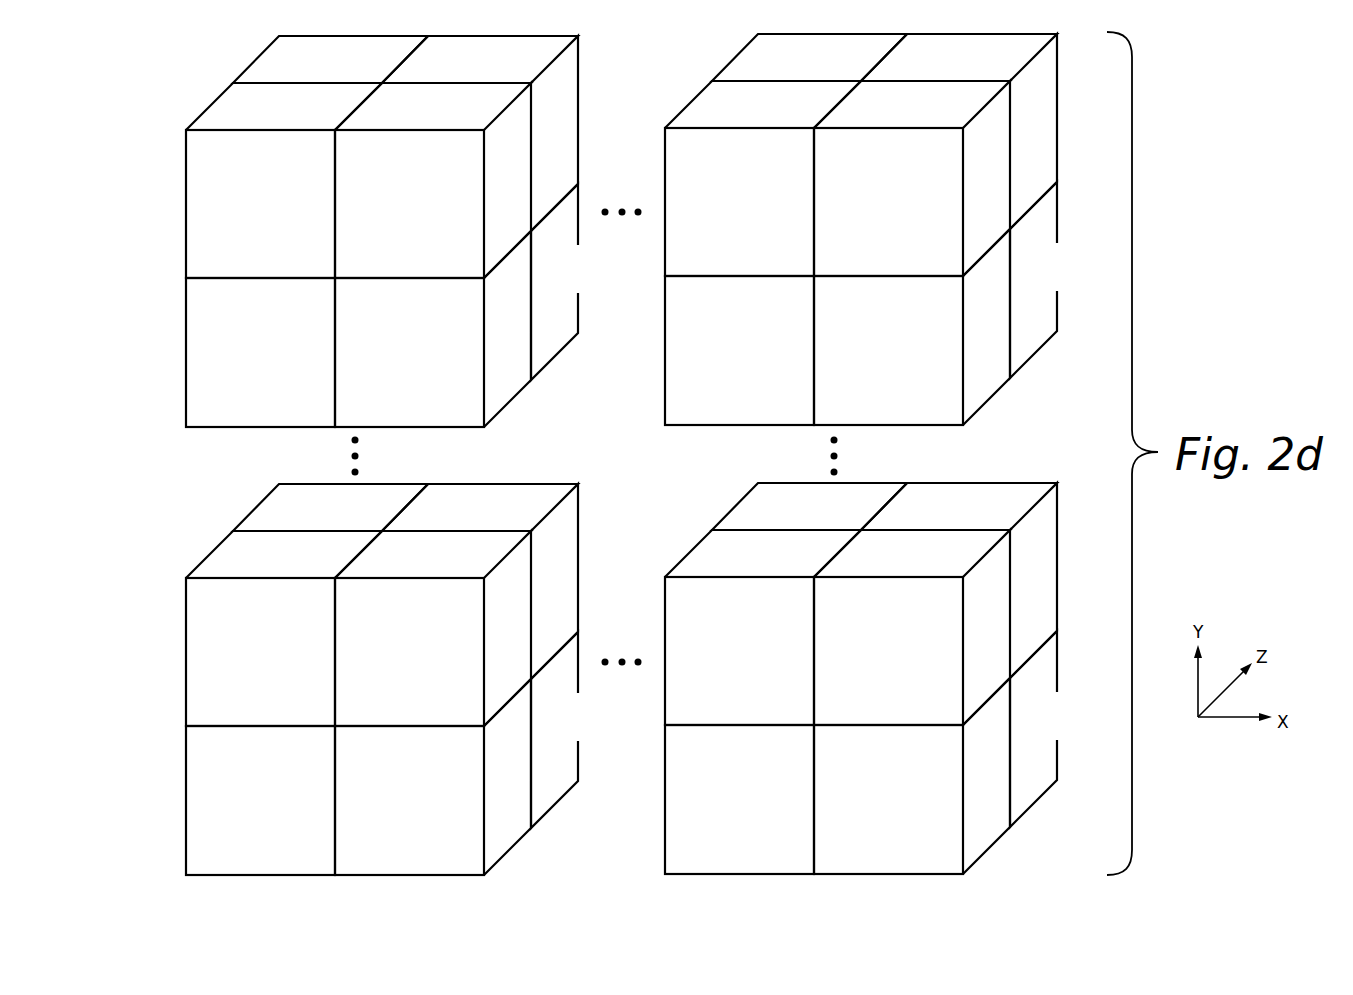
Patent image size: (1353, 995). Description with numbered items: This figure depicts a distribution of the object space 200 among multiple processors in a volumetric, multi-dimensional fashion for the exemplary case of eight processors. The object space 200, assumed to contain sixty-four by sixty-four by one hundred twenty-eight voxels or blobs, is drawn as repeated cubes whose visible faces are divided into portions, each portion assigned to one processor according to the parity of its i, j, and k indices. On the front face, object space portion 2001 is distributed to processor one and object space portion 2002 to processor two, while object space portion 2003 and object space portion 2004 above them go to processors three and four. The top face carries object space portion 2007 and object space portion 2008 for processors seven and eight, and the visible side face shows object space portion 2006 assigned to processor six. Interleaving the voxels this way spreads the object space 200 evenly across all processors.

The object space 200 is at (626, 454).
The object space portion 2001 is at (500, 575).
The object space portion 2002 is at (672, 552).
The object space portion 2003 is at (523, 403).
The object space portion 2004 is at (672, 403).
The object space portion 2006 is at (798, 505).
The object space portion 2007 is at (570, 282).
The object space portion 2008 is at (719, 356).